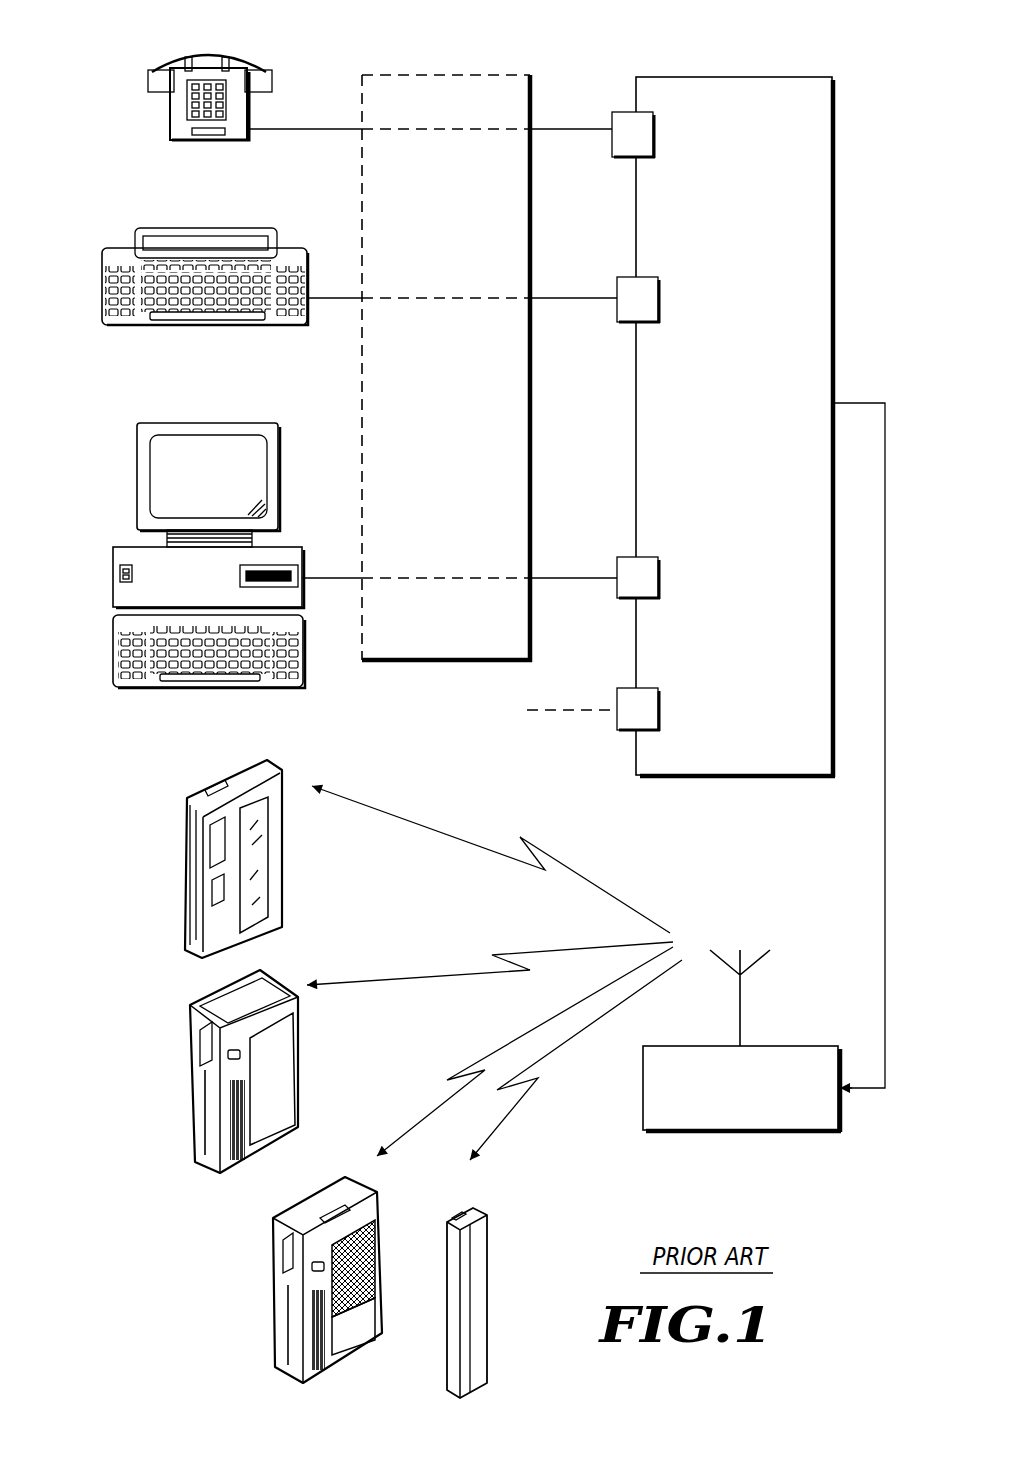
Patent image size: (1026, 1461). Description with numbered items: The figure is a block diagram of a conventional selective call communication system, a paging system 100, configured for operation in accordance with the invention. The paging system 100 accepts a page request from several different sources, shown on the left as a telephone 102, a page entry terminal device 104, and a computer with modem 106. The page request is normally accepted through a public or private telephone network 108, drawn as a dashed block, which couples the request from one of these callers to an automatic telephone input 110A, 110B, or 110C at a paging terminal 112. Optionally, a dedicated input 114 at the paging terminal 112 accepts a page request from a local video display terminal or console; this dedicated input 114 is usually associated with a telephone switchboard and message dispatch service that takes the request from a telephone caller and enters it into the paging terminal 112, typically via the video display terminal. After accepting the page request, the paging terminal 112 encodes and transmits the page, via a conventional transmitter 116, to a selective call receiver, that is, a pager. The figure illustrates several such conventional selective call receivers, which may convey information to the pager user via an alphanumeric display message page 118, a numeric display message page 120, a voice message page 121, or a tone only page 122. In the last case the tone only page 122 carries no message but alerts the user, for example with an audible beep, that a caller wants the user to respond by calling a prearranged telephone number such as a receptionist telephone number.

The paging system 100 is at (740, 52).
The telephone 102 is at (168, 113).
The page entry terminal device 104 is at (102, 256).
The computer with modem 106 is at (113, 548).
The public or private telephone network 108 is at (530, 77).
The automatic telephone input 110A is at (608, 145).
The automatic telephone input 110B is at (613, 308).
The automatic telephone input 110C is at (613, 592).
The paging terminal 112 is at (832, 77).
The dedicated input 114 is at (612, 725).
The transmitter 116 is at (780, 1045).
The alphanumeric display message page 118 is at (270, 760).
The numeric display message page 120 is at (258, 970).
The voice message page 121 is at (343, 1150).
The tone only page 122 is at (468, 1190).